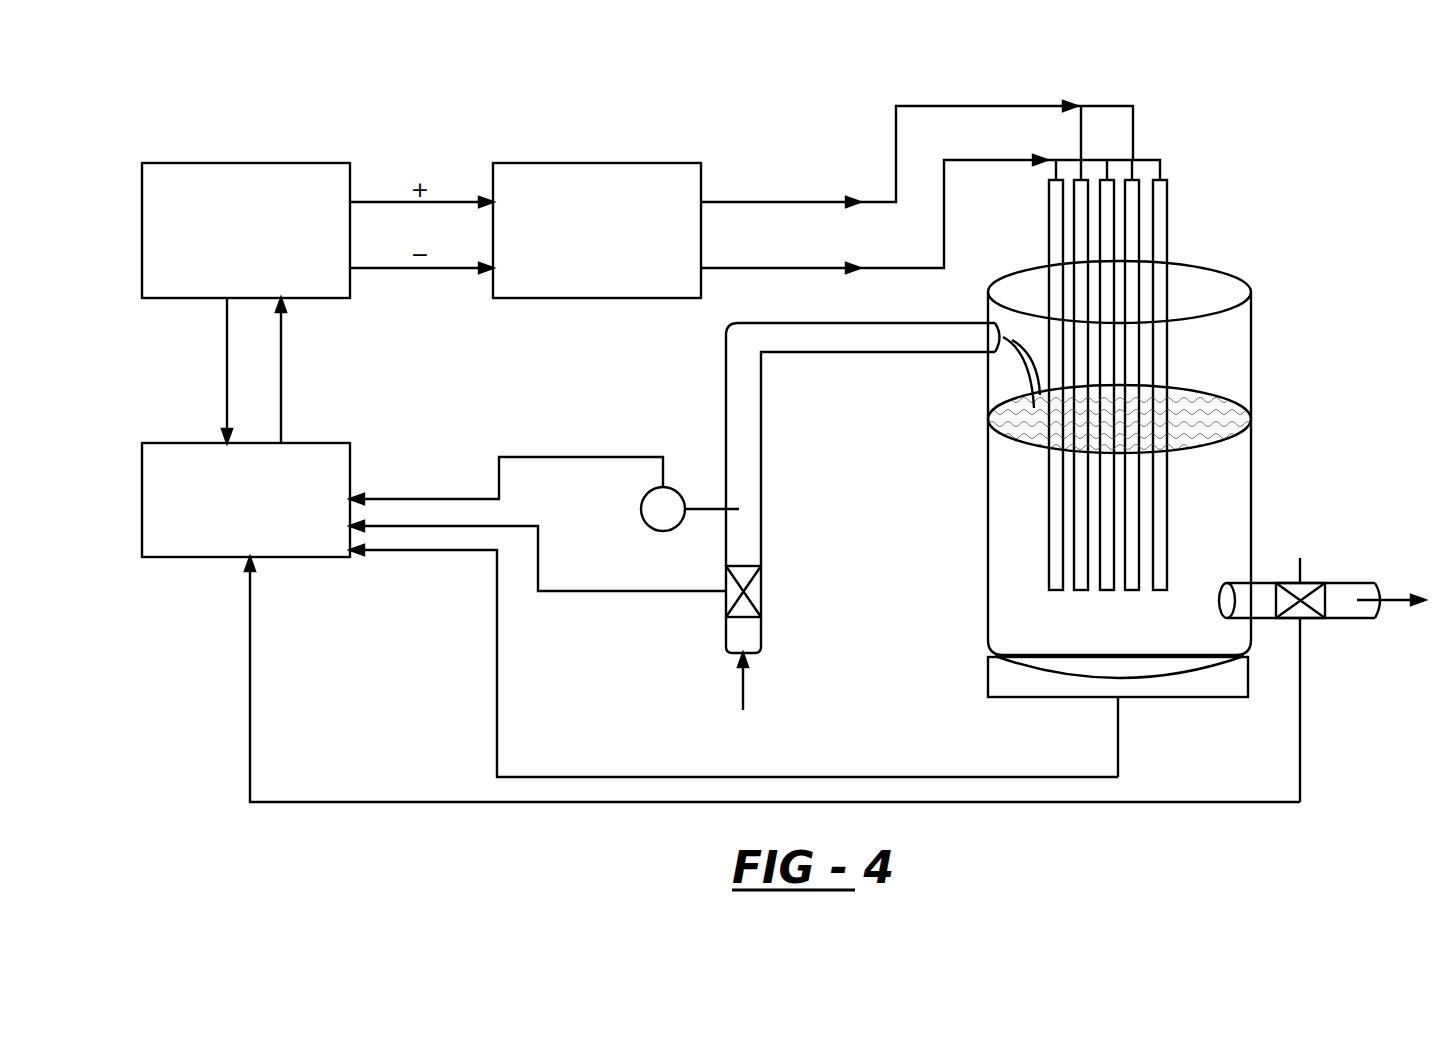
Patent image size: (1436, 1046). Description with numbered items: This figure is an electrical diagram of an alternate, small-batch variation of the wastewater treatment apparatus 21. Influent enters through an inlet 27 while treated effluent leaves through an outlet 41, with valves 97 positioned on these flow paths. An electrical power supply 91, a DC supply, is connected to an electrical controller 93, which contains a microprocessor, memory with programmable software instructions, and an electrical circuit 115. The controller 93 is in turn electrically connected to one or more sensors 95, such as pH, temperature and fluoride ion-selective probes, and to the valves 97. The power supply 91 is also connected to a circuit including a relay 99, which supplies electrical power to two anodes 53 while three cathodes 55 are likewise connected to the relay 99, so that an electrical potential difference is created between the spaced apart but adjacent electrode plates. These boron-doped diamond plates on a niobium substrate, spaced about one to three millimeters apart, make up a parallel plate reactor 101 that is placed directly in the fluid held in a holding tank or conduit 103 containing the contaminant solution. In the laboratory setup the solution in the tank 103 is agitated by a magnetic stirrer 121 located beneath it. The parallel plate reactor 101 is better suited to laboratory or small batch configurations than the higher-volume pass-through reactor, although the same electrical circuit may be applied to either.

The electrochemical system 21 is at (1302, 76).
The inlet 27 is at (731, 658).
The outlet 41 is at (1380, 590).
The anodes 53 is at (1132, 222).
The cathodes 55 is at (1160, 240).
The electrical power supply 91 is at (222, 240).
The electrical controller 93 is at (224, 510).
The sensors 95 is at (678, 483).
The valves 97 is at (748, 605).
The relay 99 is at (569, 240).
The parallel plate reactor 101 is at (1270, 337).
The holding tank or conduit 103 is at (1218, 486).
The electrical circuit 115 is at (943, 106).
The magnetic stirrer 121 is at (997, 683).